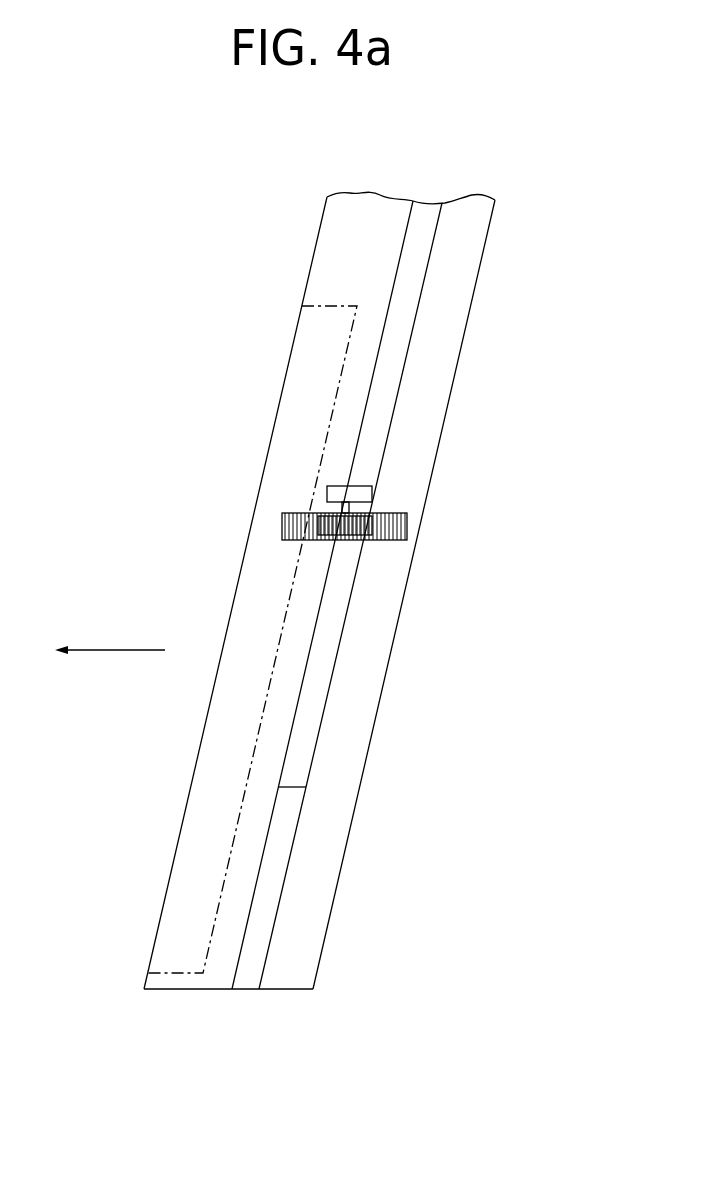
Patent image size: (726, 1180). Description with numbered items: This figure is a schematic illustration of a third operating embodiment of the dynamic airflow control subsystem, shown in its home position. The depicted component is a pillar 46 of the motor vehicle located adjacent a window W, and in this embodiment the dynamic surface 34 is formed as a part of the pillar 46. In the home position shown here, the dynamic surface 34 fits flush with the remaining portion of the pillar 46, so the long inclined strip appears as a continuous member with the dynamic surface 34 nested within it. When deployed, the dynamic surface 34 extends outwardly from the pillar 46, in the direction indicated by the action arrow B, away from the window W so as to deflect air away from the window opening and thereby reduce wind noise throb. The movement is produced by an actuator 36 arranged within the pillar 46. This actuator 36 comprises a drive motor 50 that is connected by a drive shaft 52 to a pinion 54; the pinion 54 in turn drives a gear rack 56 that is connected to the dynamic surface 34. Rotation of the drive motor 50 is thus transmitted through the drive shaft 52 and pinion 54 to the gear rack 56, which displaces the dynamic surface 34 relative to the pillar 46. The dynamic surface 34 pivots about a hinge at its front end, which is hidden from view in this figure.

The dynamic surface 34 is at (208, 742).
The pillar 46 is at (353, 235).
The actuator 36 is at (404, 485).
The drive motor 50 is at (337, 487).
The drive shaft 52 is at (345, 506).
The pinion 54 is at (352, 532).
The gear rack 56 is at (395, 525).
The window W is at (277, 866).
The action arrow B is at (110, 650).